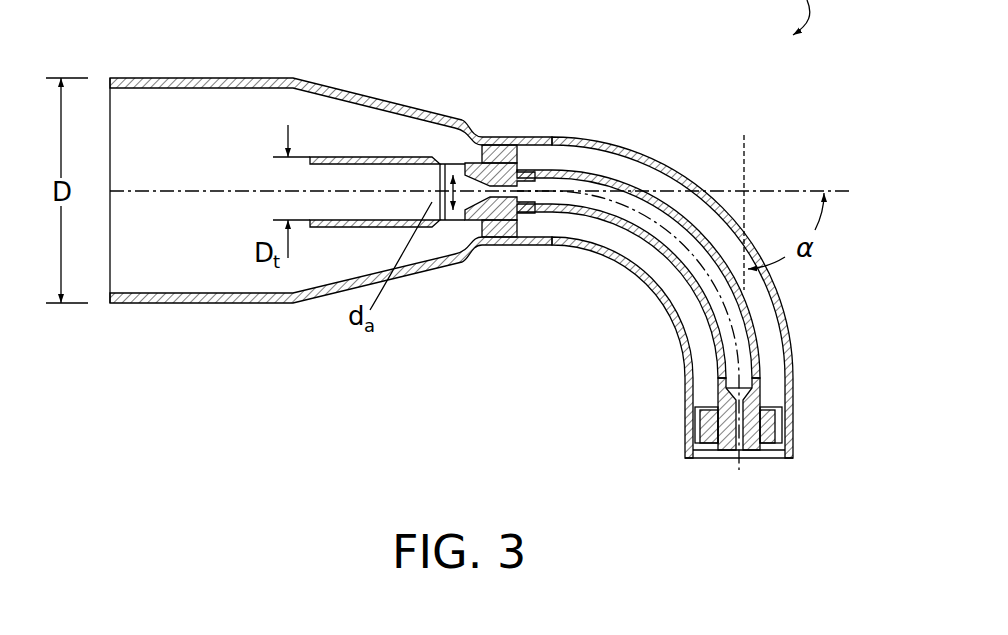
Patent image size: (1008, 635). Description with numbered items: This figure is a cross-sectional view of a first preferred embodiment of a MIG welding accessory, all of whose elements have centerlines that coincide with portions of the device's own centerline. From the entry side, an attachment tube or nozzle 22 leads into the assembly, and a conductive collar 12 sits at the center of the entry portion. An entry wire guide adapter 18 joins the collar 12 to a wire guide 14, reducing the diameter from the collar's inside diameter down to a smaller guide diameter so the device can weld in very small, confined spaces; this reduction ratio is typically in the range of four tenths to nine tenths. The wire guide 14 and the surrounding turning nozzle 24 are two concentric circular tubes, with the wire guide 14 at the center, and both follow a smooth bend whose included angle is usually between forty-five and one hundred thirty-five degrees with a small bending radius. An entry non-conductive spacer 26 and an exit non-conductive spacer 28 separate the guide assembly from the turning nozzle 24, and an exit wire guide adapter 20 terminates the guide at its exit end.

The conductive collar 12 is at (377, 157).
The wire guide 14 is at (688, 284).
The entry wire guide adapter 18 is at (483, 198).
The exit wire guide adapter 20 is at (718, 421).
The attachment tube or nozzle 22 is at (268, 78).
The turning nozzle 24 is at (642, 153).
The entry non-conductive spacer 26 is at (502, 150).
The exit non-conductive spacer 28 is at (778, 416).